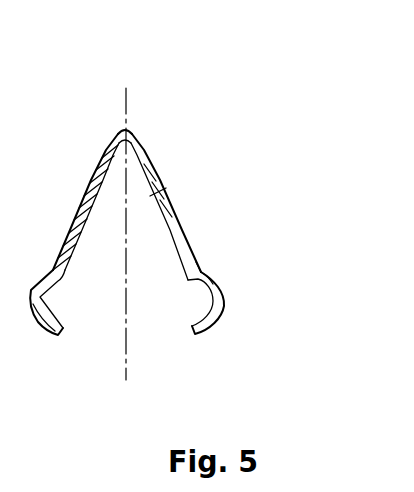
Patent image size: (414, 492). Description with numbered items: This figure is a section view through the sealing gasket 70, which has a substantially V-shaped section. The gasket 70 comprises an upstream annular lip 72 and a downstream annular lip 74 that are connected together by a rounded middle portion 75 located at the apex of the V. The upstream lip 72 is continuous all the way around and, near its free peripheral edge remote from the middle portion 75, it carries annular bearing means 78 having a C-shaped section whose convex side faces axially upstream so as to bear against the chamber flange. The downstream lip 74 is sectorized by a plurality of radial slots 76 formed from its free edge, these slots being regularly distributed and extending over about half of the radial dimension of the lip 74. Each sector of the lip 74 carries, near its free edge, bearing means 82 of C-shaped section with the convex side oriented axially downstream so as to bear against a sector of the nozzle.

The gasket 70 is at (88, 140).
The upstream annular lip 72 is at (88, 194).
The downstream annular lip 74 is at (155, 180).
The rounded middle portion 75 is at (131, 130).
The radial slots 76 is at (200, 275).
The annular bearing means 78 is at (28, 300).
The bearing means 82 is at (226, 302).